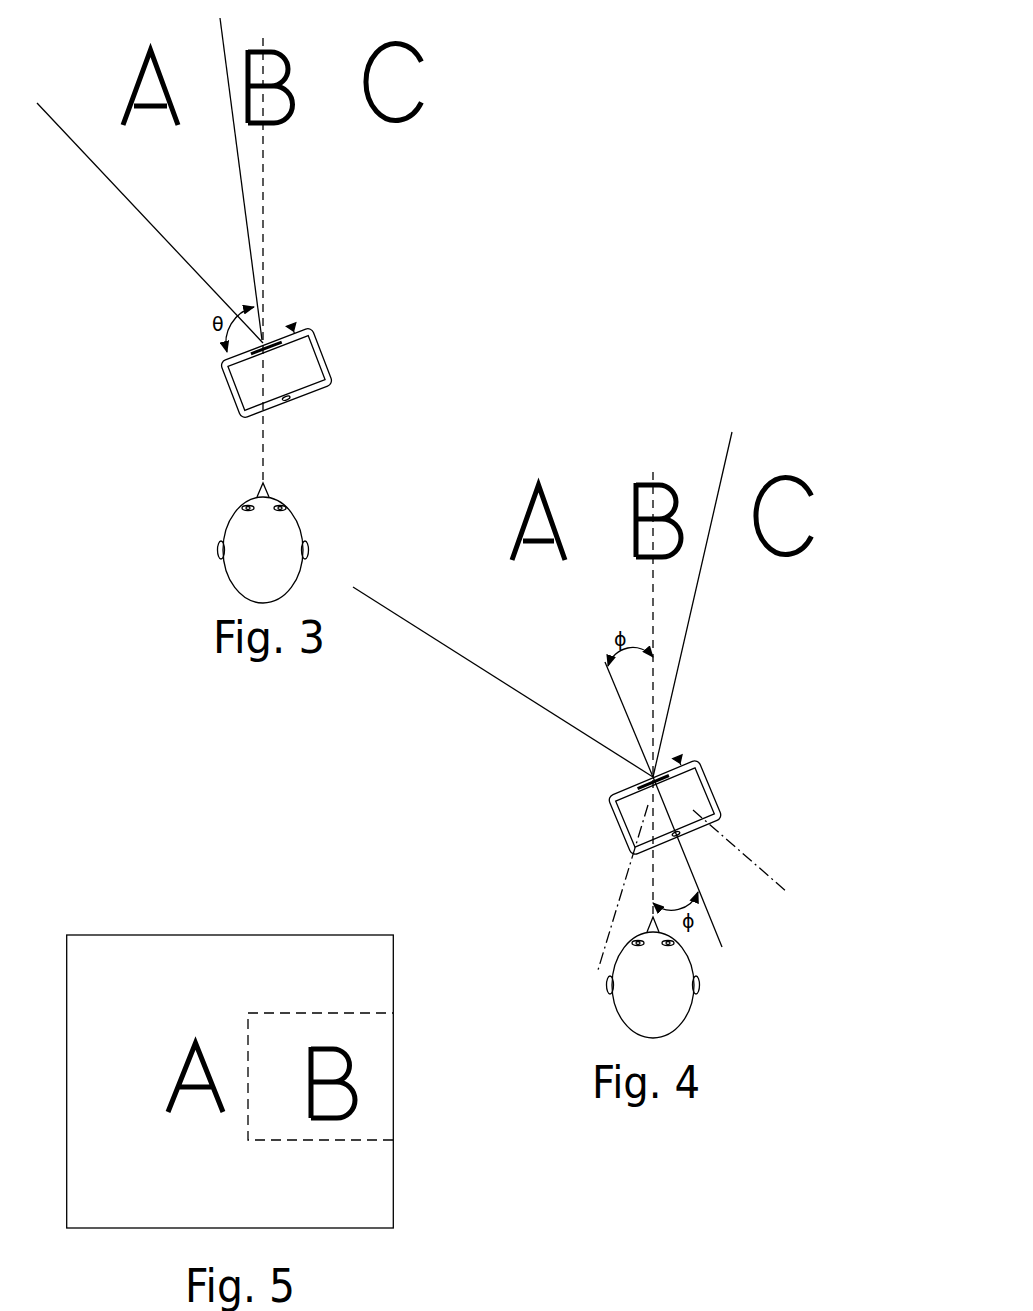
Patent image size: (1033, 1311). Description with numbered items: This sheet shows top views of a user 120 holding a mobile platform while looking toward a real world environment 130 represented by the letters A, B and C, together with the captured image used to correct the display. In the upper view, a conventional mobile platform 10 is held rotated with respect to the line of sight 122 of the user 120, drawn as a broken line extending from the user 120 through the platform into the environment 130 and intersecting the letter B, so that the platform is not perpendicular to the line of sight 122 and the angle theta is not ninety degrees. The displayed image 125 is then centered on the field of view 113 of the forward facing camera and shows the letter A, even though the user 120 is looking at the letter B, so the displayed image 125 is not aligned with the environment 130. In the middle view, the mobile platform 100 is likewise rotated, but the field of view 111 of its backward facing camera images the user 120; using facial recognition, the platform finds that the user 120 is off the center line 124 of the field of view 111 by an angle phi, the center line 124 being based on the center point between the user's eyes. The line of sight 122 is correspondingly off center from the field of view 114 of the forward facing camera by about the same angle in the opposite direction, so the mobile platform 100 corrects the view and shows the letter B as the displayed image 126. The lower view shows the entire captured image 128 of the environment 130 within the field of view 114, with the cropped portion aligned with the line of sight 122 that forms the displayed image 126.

In FIG. 3, the conventional mobile platform 10 is at (332, 378).
In FIG. 4, the mobile platform 100 is at (717, 798).
In FIG. 4, the field of view of the backward facing camera 111 is at (600, 963).
In FIG. 3, the field of view of the forward facing camera 113 is at (117, 187).
In FIG. 4, the field of view of the forward facing camera 114 is at (503, 685).
In FIG. 3, the user 120 is at (303, 530).
In FIG. 4, the user 120 is at (687, 1020).
In FIG. 3, the line of sight 122 is at (265, 228).
In FIG. 4, the line of sight 122 is at (655, 682).
In FIG. 4, the center line of the field of view 124 is at (718, 933).
In FIG. 3, the displayed image 125 is at (265, 389).
In FIG. 4, the displayed image 126 is at (647, 802).
In FIG. 5, the displayed image 126 is at (330, 1013).
In FIG. 5, the captured image 128 is at (196, 935).
In FIG. 3, the real world environment 130 is at (126, 52).
In FIG. 4, the real world environment 130 is at (676, 451).